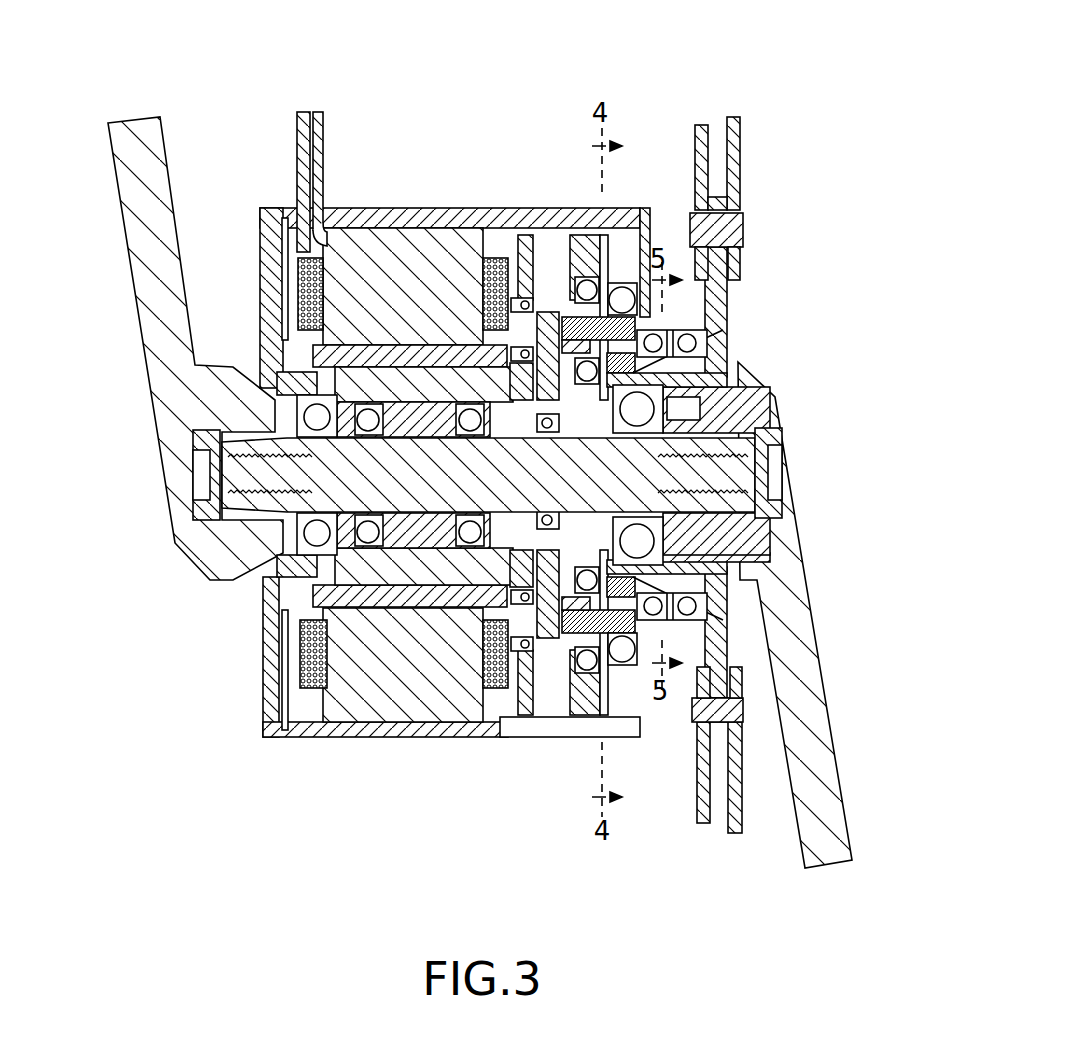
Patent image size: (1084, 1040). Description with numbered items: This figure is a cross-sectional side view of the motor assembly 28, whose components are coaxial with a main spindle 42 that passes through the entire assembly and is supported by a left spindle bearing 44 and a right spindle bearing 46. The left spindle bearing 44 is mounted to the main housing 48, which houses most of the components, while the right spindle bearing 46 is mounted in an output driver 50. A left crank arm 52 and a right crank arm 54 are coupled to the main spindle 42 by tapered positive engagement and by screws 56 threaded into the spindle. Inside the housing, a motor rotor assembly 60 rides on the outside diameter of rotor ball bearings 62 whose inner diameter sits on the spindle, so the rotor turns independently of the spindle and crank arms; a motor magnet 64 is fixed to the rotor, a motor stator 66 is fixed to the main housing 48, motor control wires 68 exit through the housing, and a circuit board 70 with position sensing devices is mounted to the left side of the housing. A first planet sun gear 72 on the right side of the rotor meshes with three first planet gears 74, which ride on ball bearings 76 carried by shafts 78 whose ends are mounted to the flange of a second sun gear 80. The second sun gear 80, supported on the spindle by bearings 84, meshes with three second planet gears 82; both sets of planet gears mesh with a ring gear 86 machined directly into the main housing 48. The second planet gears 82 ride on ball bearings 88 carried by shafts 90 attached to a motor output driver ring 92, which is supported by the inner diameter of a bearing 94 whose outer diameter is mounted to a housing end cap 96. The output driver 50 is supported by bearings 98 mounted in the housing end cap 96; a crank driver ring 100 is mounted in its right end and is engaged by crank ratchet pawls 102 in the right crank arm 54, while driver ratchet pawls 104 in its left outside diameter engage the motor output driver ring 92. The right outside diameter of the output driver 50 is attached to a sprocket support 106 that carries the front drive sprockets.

The motor assembly 28 is at (628, 72).
The main spindle 42 is at (298, 498).
The left spindle bearing 44 is at (315, 533).
The right spindle bearing 46 is at (640, 539).
The main housing 48 is at (416, 738).
The output driver 50 is at (718, 370).
The left crank arm 52 is at (197, 544).
The right crank arm 54 is at (775, 412).
The screws 56 is at (193, 504).
The motor rotor assembly 60 is at (362, 610).
The rotor ball bearings 62 is at (468, 412).
The motor magnet 64 is at (369, 416).
The motor stator 66 is at (455, 238).
The motor control wires 68 is at (320, 125).
The circuit board 70 is at (289, 226).
The first planet sun gear 72 is at (503, 607).
The first planet gears 74 is at (528, 308).
The ball bearings 76 is at (527, 300).
The shafts 78 is at (535, 320).
The second sun gear 80 is at (590, 503).
The second planet gears 82 is at (600, 242).
The bearings 84 is at (547, 517).
The ring gear 86 is at (563, 246).
The ball bearings 88 is at (622, 262).
The shafts 90 is at (611, 283).
The motor output driver ring 92 is at (645, 663).
The bearing 94 is at (631, 313).
The housing end cap 96 is at (640, 217).
The bearings 98 is at (707, 322).
The crank driver ring 100 is at (750, 377).
The crank ratchet pawls 102 is at (740, 395).
The driver ratchet pawls 104 is at (707, 360).
The sprocket support 106 is at (723, 293).